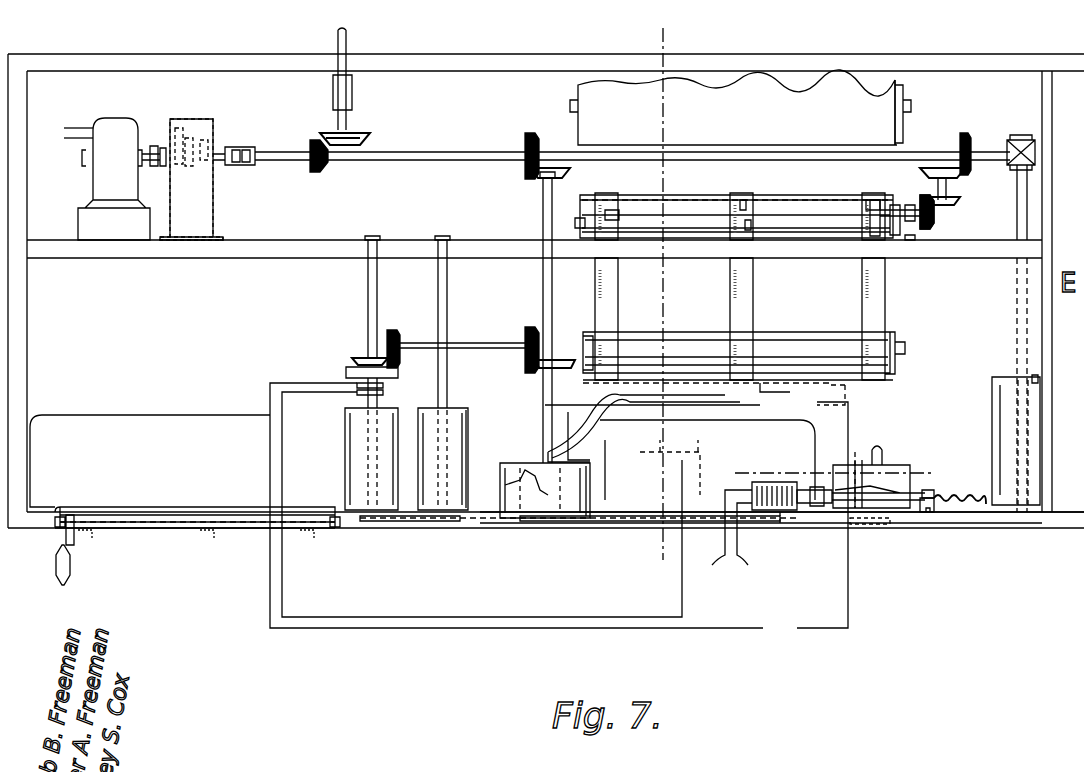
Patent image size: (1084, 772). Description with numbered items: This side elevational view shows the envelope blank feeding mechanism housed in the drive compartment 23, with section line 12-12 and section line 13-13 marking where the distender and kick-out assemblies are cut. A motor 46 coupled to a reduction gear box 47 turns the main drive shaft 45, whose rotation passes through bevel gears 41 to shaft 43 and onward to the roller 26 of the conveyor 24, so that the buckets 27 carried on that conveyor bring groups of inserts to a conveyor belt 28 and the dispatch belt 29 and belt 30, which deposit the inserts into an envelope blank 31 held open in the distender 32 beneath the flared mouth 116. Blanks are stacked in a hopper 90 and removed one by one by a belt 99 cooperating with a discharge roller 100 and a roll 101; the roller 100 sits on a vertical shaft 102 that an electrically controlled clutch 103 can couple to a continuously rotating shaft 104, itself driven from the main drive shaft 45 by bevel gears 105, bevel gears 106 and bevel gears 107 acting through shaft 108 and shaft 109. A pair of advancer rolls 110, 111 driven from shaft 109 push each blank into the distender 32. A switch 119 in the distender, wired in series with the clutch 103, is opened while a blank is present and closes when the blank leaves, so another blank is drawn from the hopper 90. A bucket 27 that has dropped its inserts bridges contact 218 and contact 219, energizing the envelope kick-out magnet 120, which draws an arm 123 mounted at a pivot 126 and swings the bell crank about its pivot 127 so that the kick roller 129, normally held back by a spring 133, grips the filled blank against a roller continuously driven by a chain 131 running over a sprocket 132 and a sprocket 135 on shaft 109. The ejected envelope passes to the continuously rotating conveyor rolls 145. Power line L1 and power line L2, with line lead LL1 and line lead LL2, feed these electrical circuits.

The section line 12- 12 is at (680, 566).
The section line 13- 13 is at (741, 473).
The drive compartment 23 is at (447, 90).
The conveyor 24 is at (886, 92).
The roller 26 is at (906, 90).
The buckets 27 is at (900, 168).
The conveyor belt 28 is at (655, 222).
The belt 29 is at (880, 382).
The belt 30 is at (880, 290).
The envelope blank 31 is at (855, 470).
The distender 32 is at (625, 408).
The bevel gears 41 is at (352, 160).
The shaft 43 is at (338, 42).
The main drive shaft 45 is at (268, 155).
The motor 46 is at (122, 136).
The reduction gear box 47 is at (196, 135).
The hopper 90 is at (192, 450).
The belt 99 is at (412, 475).
The discharge roller 100 is at (358, 512).
The roll 101 is at (462, 512).
The vertical shaft 102 is at (368, 400).
The electrically controlled clutch 103 is at (350, 368).
The continuously rotating shaft 104 is at (378, 302).
The bevel gears 105 is at (390, 342).
The bevel gears 106 is at (530, 362).
The bevel gears 107 is at (538, 174).
The shaft 108 is at (480, 345).
The shaft 109 is at (546, 272).
The advancer roll 110 is at (515, 477).
The advancer roll 111 is at (542, 478).
The flared mouth 116 is at (832, 393).
The switch 119 is at (681, 473).
The envelope kick-out magnet 120 is at (785, 513).
The arm 123 is at (858, 495).
The pivot 126 is at (932, 494).
The pivot 127 is at (930, 508).
The kick roller 129 is at (882, 495).
The chain 131 is at (800, 525).
The sprocket 132 is at (895, 528).
The spring 133 is at (950, 500).
The sprocket 135 is at (564, 524).
The conveyor rolls 145 is at (1008, 395).
The contact 218 is at (721, 539).
The contact 219 is at (758, 545).
The power line L1 is at (74, 119).
The power line L2 is at (74, 139).
The line lead LL1 is at (735, 630).
The line lead LL2 is at (805, 630).